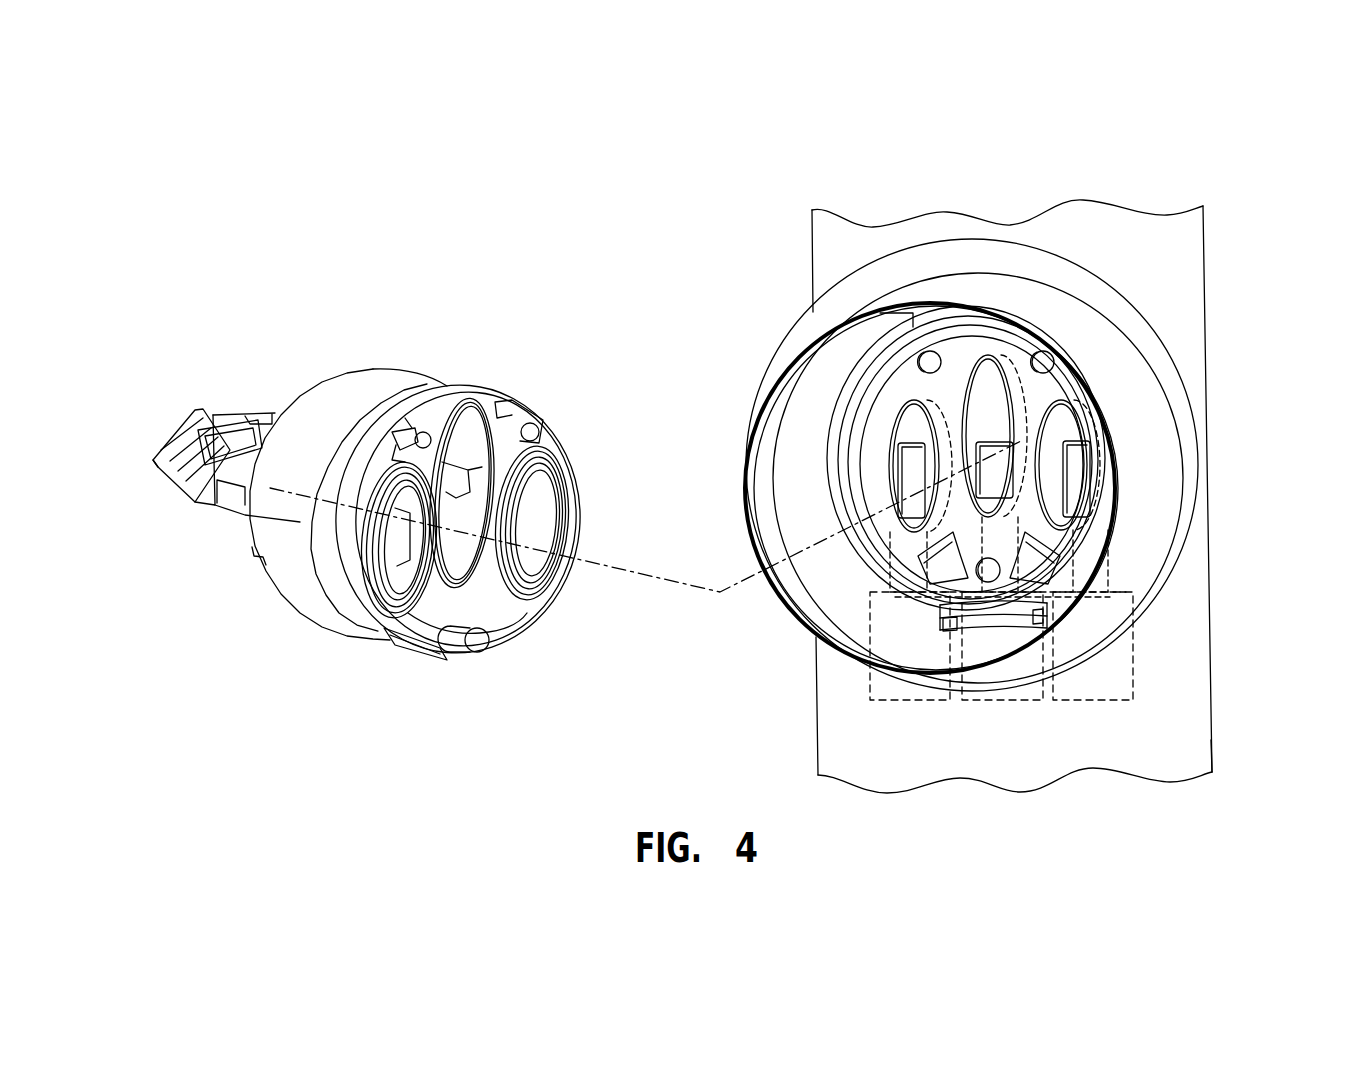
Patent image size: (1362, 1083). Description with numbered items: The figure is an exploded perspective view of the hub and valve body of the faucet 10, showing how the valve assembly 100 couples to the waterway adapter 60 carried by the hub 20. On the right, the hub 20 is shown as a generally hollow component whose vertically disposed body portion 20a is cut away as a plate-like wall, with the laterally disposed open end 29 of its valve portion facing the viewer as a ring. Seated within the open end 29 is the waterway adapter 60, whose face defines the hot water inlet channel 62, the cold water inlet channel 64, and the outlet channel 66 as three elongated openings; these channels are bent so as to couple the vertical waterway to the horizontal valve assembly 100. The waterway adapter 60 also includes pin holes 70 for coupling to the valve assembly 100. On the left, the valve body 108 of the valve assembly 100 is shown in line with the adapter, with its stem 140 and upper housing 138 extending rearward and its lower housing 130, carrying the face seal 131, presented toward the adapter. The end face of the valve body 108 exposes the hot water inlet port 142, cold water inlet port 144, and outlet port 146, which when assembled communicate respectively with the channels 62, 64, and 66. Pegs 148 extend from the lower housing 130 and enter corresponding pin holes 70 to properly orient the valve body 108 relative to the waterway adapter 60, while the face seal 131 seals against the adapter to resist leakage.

The faucet 10 is at (1168, 175).
The hub 20 is at (1183, 253).
The body portion 20a is at (1200, 718).
The open end 29 is at (752, 433).
The waterway adapter 60 is at (1052, 540).
The hot water inlet channel 62 is at (912, 427).
The cold water inlet channel 64 is at (986, 400).
The outlet channel 66 is at (1057, 437).
The pin holes 70 is at (982, 576).
The valve assembly 100 is at (300, 697).
The valve body 108 is at (366, 380).
The lower housing 130 is at (390, 633).
The face seal 131 is at (535, 600).
The upper housing 138 is at (257, 535).
The stem 140 is at (193, 440).
The hot water inlet port 142 is at (528, 556).
The cold water inlet port 144 is at (464, 443).
The outlet port 146 is at (385, 558).
The pegs 148 is at (478, 653).